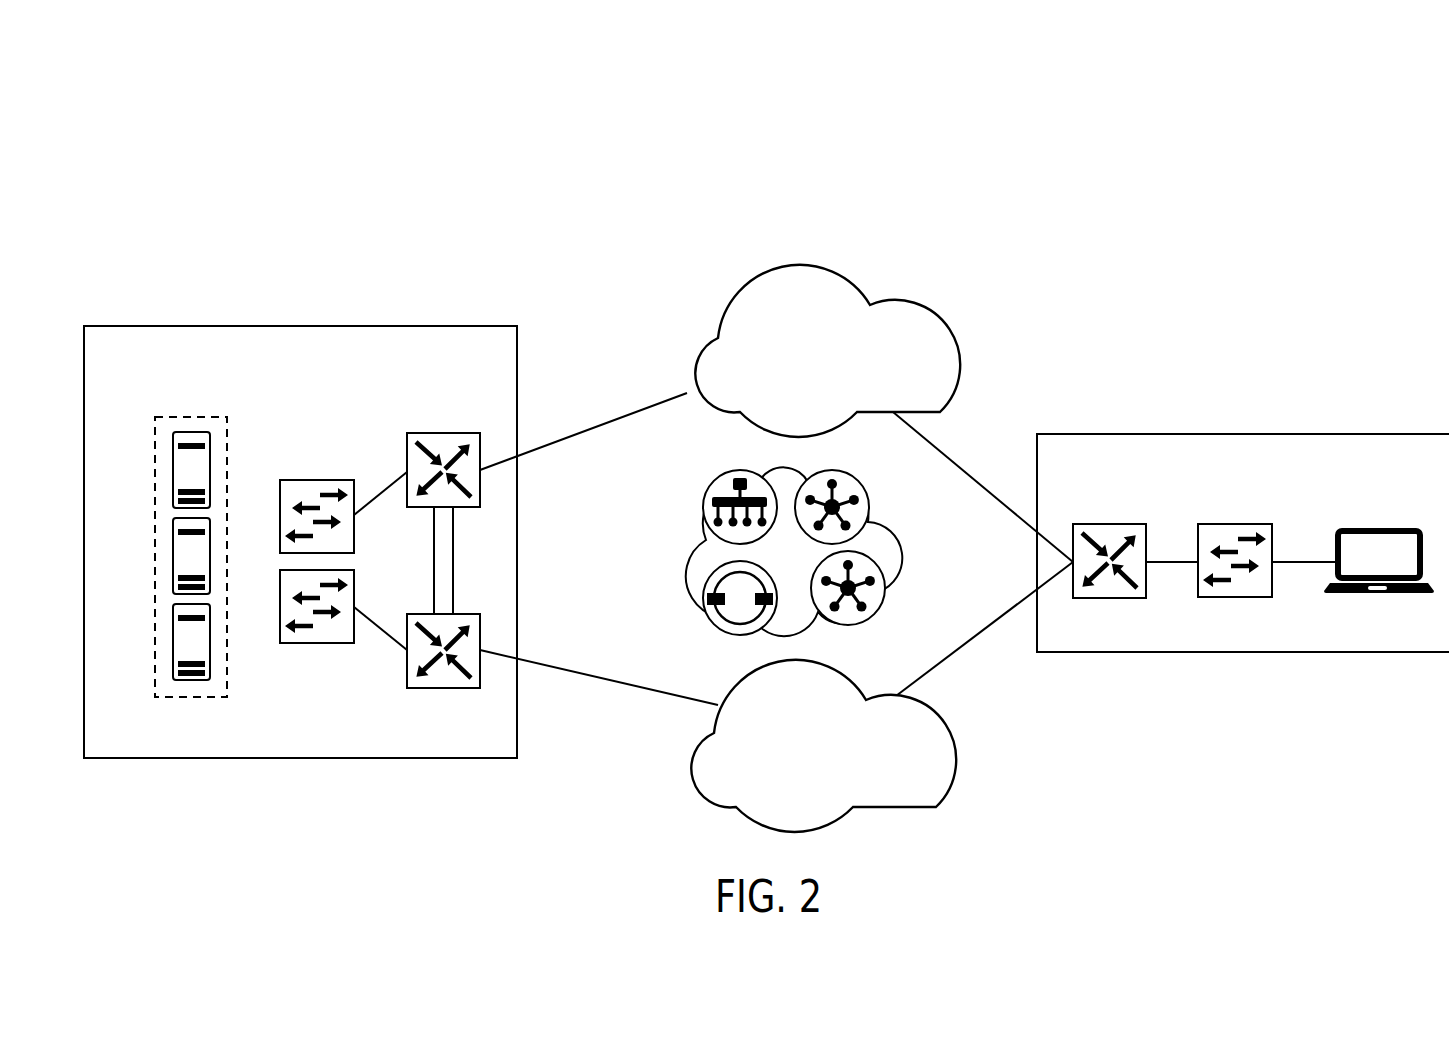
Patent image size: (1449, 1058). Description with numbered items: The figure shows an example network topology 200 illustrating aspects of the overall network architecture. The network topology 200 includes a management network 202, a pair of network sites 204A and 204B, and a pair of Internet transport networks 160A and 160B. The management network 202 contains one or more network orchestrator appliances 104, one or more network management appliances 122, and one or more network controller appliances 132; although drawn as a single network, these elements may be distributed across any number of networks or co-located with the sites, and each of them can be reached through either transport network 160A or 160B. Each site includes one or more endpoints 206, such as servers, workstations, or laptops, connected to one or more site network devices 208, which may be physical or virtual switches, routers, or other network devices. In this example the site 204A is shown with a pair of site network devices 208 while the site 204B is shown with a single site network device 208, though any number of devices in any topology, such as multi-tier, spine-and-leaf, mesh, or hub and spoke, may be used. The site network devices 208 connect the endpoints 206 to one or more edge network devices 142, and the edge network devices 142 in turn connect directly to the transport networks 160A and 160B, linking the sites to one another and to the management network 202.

The network topology 200 is at (1412, 190).
The network site 204A is at (375, 376).
The network site 204B is at (1320, 486).
The endpoint 206 is at (173, 470).
The site network device 208 is at (297, 479).
The edge network device 142 is at (443, 433).
The Internet transport network 160A is at (845, 377).
The Internet transport network 160B is at (842, 772).
The management network 202 is at (910, 557).
The network management appliance 122 is at (715, 483).
The network controller appliance 132 is at (853, 473).
The network orchestrator appliance 104 is at (715, 630).